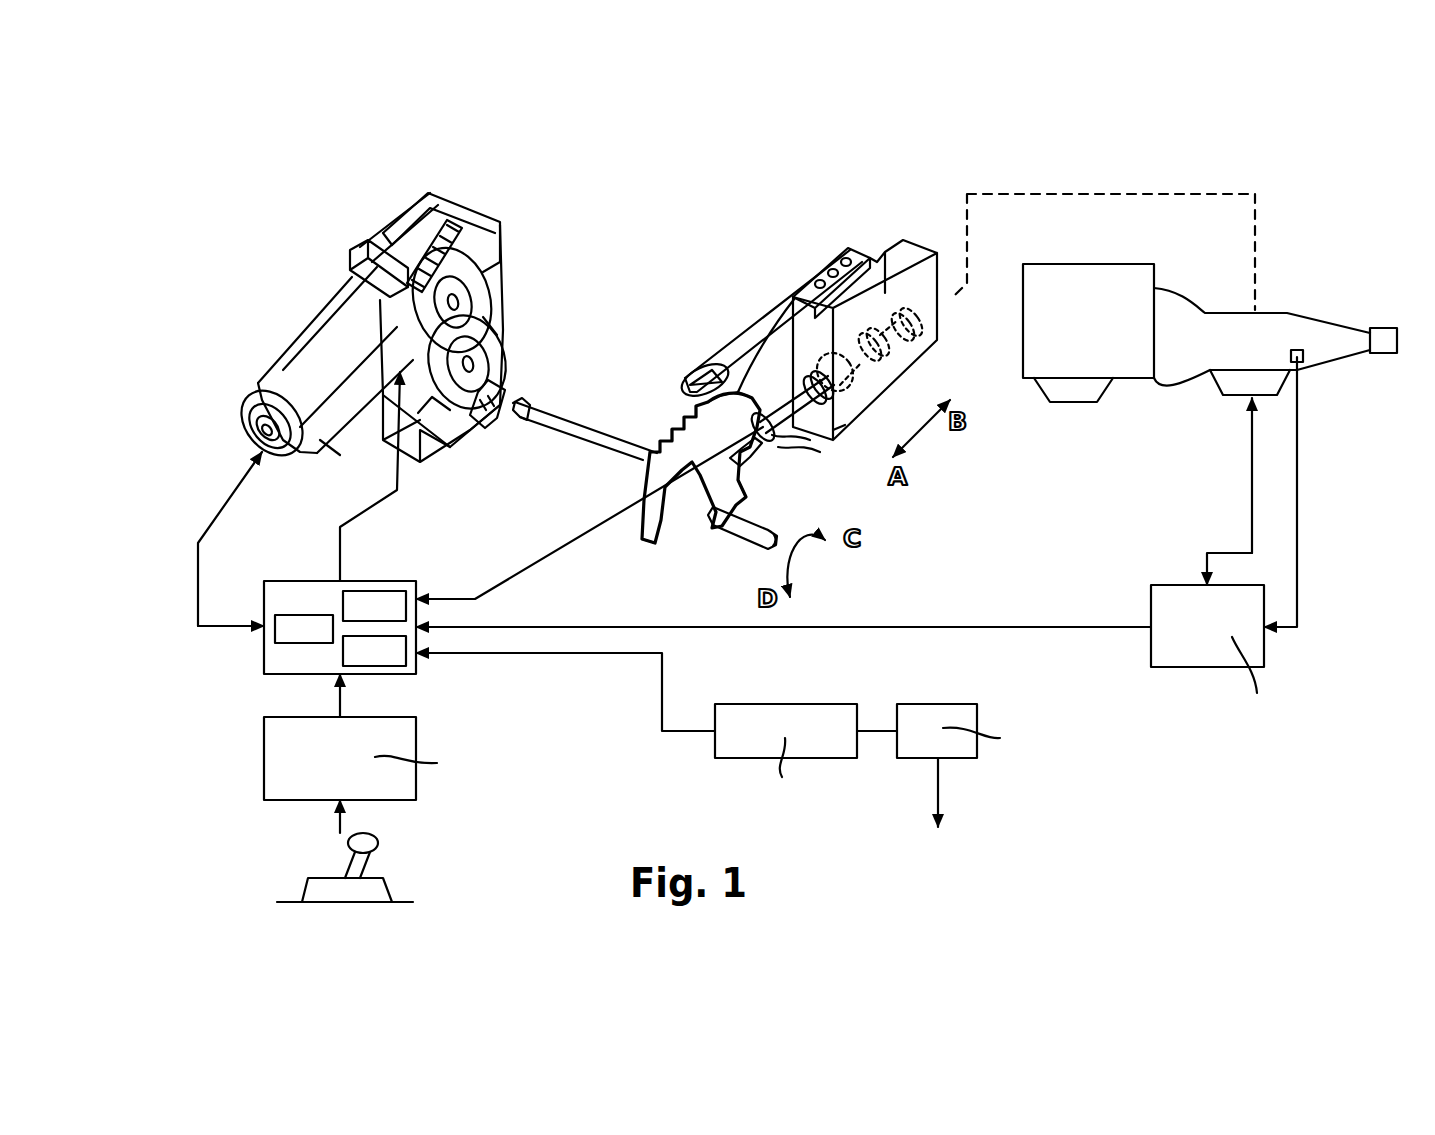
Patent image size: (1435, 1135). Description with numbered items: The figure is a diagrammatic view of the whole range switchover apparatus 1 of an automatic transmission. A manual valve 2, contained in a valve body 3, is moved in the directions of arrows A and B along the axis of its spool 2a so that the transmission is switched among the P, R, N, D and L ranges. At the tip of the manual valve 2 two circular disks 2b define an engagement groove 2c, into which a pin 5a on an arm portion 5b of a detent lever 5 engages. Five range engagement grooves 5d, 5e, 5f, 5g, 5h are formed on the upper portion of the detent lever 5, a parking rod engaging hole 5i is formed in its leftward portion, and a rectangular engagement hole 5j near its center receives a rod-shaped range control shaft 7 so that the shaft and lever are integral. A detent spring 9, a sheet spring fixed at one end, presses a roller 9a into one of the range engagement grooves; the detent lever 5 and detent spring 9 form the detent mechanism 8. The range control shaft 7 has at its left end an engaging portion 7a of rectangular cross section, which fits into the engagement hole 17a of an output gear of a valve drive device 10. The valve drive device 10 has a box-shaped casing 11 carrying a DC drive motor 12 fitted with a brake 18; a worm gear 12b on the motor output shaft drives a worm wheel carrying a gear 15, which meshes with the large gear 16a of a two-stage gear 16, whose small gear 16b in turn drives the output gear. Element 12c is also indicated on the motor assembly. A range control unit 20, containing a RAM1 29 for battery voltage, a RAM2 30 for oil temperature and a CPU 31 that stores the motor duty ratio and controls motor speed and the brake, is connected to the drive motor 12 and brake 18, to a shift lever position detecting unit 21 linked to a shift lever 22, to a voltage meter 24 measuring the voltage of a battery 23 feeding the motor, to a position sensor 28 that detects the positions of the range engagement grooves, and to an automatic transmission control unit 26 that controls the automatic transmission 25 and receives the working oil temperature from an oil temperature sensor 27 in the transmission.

The range switchover apparatus 1 is at (645, 218).
The manual valve 2 is at (910, 340).
The spool 2a is at (852, 425).
The circular disks 2b is at (800, 443).
The engagement groove 2c is at (768, 415).
The valve body 3 is at (915, 235).
The detent lever 5 is at (660, 403).
The pin 5a is at (750, 450).
The arm portion 5b is at (745, 482).
The range engagement groove 5d is at (733, 392).
The range engagement groove 5e is at (700, 372).
The range engagement groove 5f is at (673, 380).
The range engagement groove 5g is at (655, 420).
The range engagement groove 5h is at (650, 445).
The parking rod engaging hole 5i is at (657, 548).
The engagement hole 5j is at (725, 545).
The range control shaft 7 is at (597, 462).
The engaging portion 7a is at (513, 418).
The detent mechanism 8 is at (760, 275).
The detent spring 9 is at (785, 300).
The roller 9a is at (690, 368).
The valve drive device 10 is at (470, 195).
The casing 11 is at (497, 290).
The drive motor 12 is at (307, 327).
The worm gear 12b is at (403, 230).
The motor housing portion 12c is at (323, 427).
The gear 15 is at (507, 252).
The two-stage gear 16 is at (505, 333).
The large gear 16a is at (483, 317).
The small gear 16b is at (418, 413).
The engagement hole 17a is at (497, 420).
The brake 18 is at (350, 280).
The range control unit 20 is at (264, 660).
The shift lever position detecting unit 21 is at (264, 782).
The shift lever 22 is at (370, 862).
The battery 23 is at (960, 704).
The voltage meter 24 is at (839, 704).
The automatic transmission 25 is at (1170, 288).
The automatic transmission control unit 26 is at (1210, 667).
The oil temperature sensor 27 is at (1303, 357).
The position sensor 28 is at (735, 385).
The RAM1 29 is at (398, 666).
The RAM2 30 is at (398, 591).
The CPU 31 is at (292, 615).